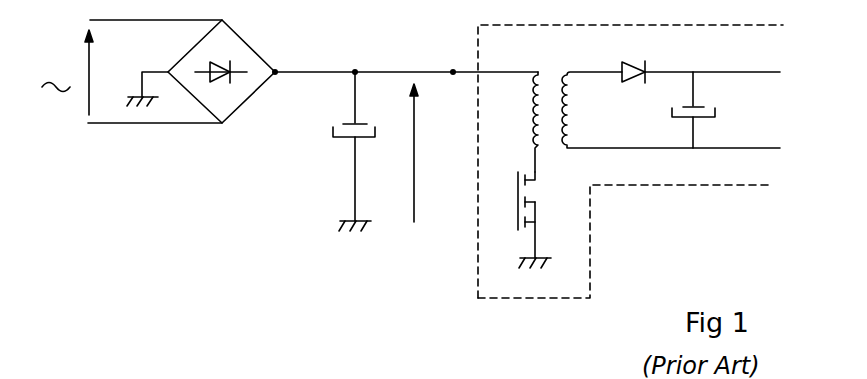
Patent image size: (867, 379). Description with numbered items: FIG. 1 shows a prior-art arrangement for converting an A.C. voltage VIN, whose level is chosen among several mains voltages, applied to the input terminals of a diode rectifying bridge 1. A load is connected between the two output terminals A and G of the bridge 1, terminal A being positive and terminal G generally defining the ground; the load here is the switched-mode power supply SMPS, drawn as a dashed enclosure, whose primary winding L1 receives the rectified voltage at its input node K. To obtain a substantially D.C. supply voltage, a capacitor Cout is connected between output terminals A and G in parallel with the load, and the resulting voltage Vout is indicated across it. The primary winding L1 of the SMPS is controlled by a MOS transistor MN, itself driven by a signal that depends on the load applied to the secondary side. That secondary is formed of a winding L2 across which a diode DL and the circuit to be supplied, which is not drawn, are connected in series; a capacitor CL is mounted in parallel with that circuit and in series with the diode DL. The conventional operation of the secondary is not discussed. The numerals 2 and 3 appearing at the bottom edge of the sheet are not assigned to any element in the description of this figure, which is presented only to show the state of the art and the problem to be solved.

The diode rectifying bridge 1 is at (244, 42).
The output terminal A is at (279, 76).
The input node of switched mode power supply K is at (453, 71).
The output terminal G is at (136, 89).
The A.C. voltage VIN is at (65, 72).
The rectified output voltage Vout is at (435, 153).
The capacitor Cout is at (336, 150).
The switched-mode power supply SMPS is at (580, 200).
The primary winding L1 is at (536, 99).
The winding L2 is at (576, 121).
The MOS transistor MN is at (515, 220).
The diode DL is at (701, 59).
The capacitor CL is at (707, 110).
The reference numeral 2 is at (413, 378).
The reference numeral 3 is at (287, 368).